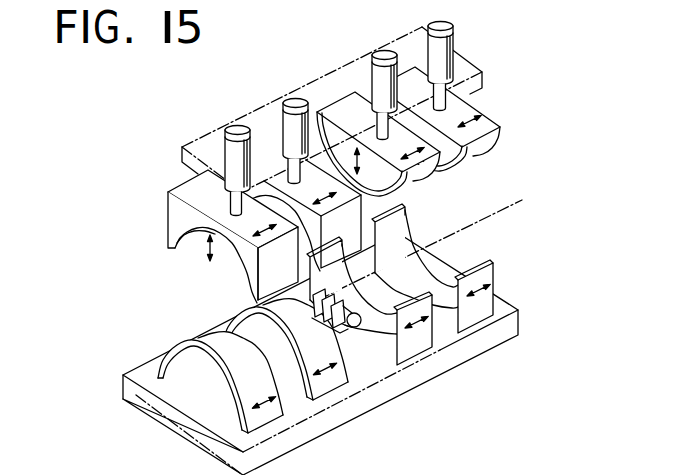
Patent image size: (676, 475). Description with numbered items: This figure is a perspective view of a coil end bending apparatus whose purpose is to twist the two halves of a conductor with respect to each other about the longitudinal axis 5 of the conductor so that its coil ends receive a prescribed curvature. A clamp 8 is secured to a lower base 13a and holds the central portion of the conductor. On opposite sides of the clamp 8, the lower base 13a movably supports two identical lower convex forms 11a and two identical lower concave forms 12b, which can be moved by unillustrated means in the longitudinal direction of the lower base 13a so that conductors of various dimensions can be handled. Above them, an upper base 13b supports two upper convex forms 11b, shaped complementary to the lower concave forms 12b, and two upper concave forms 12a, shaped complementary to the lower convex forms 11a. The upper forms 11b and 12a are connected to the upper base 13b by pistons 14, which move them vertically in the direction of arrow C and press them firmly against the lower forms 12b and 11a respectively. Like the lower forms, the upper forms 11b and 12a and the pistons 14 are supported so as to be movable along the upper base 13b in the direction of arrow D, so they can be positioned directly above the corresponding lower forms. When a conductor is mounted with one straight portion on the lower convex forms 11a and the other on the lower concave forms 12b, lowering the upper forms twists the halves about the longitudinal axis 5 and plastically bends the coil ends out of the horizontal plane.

The pistons 14 is at (224, 132).
The upper concave forms 12a is at (273, 145).
The lower concave forms 12b is at (473, 318).
The lower convex forms 11a is at (243, 316).
The upper convex forms 11b is at (484, 134).
The lower base 13a is at (519, 319).
The upper base 13b is at (481, 62).
The longitudinal axis 5 is at (521, 199).
The clamp 8 is at (353, 328).
The arrow C is at (208, 248).
The arrow D is at (481, 116).